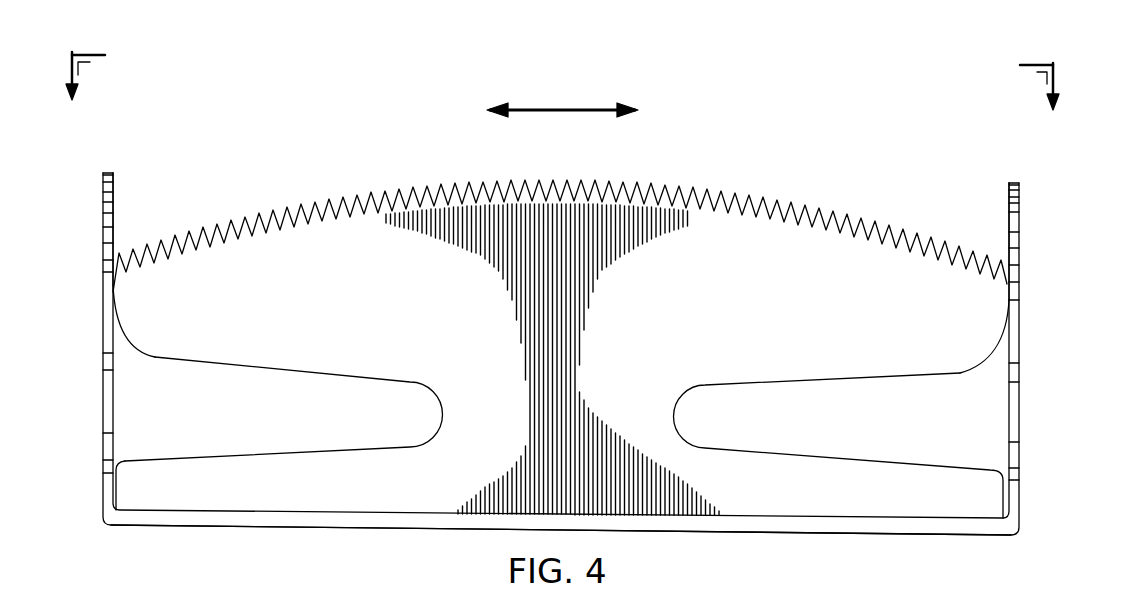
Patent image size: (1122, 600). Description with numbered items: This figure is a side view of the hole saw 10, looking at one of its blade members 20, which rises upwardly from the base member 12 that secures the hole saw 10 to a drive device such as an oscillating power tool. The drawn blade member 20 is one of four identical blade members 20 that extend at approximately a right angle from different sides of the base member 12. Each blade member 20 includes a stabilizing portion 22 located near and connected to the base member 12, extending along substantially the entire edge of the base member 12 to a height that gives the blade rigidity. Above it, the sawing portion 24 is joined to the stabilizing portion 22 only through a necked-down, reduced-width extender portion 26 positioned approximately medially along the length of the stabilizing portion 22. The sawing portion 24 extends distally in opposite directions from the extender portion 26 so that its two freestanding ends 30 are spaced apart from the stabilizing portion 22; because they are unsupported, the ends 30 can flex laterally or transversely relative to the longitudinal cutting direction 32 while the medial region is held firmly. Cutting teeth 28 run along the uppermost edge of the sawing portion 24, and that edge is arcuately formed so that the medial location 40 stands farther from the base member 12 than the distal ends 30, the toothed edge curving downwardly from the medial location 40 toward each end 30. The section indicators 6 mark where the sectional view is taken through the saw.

The hole saw 10 is at (824, 98).
The base member 12 is at (302, 528).
The blade member 20 is at (1060, 172).
The stabilizing portion 22 is at (885, 476).
The sawing portion 24 is at (103, 228).
The extender portion 26 is at (440, 422).
The cutting teeth 28 is at (313, 208).
The freestanding ends 30 is at (155, 358).
The longitudinal direction 32 is at (565, 108).
The medial location 40 is at (623, 309).
The section line 6- 6 is at (562, 97).